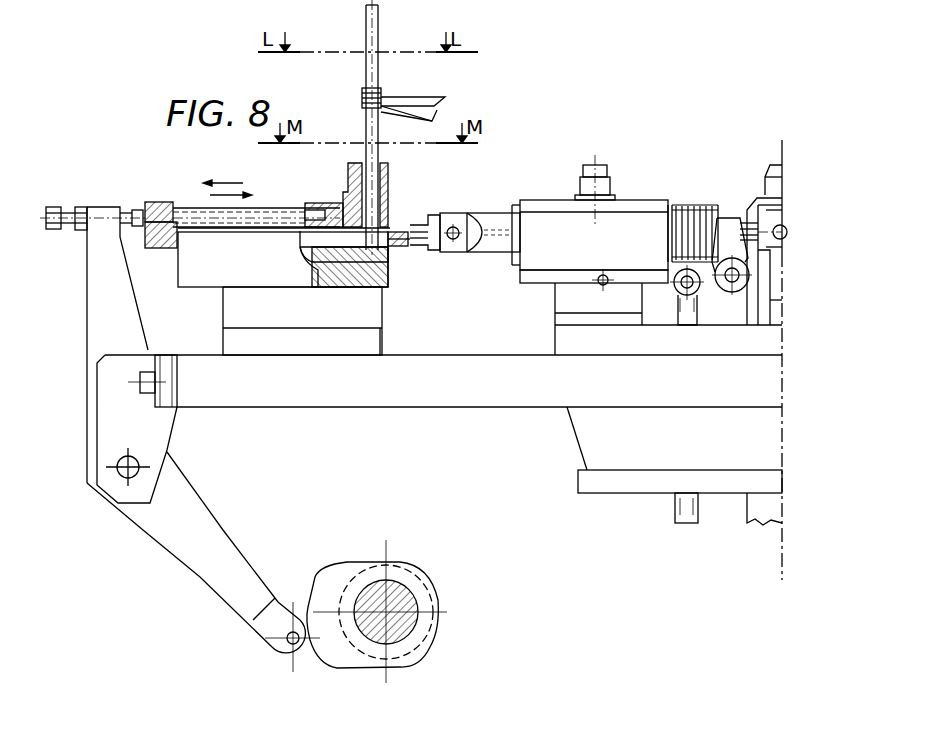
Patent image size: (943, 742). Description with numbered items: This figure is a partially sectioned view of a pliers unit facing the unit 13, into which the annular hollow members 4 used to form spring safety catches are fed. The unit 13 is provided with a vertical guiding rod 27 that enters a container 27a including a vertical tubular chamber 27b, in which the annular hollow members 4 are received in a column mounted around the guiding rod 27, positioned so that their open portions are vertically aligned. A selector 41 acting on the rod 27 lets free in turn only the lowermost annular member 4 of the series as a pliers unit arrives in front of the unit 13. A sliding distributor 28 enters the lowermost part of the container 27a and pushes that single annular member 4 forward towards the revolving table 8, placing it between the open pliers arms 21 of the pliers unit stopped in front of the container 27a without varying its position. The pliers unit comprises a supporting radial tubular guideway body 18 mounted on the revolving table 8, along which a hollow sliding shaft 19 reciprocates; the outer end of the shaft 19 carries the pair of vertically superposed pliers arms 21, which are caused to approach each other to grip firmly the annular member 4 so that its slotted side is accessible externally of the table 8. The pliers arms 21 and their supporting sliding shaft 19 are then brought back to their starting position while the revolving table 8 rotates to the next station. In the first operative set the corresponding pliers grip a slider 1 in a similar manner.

The vertical guiding rod 27 is at (379, 45).
The slider 1 is at (362, 104).
The selector 41 is at (423, 97).
The container 27a is at (348, 175).
The vertical tubular chamber 27b is at (388, 175).
The sliding distributor 28 is at (352, 240).
The annular hollow member 4 is at (408, 246).
The pliers arms 21 is at (424, 224).
The hollow sliding shaft 19 is at (470, 247).
The unit 13 is at (486, 198).
The supporting radial tubular guideway body 18 is at (622, 220).
The revolving table 8 is at (688, 345).